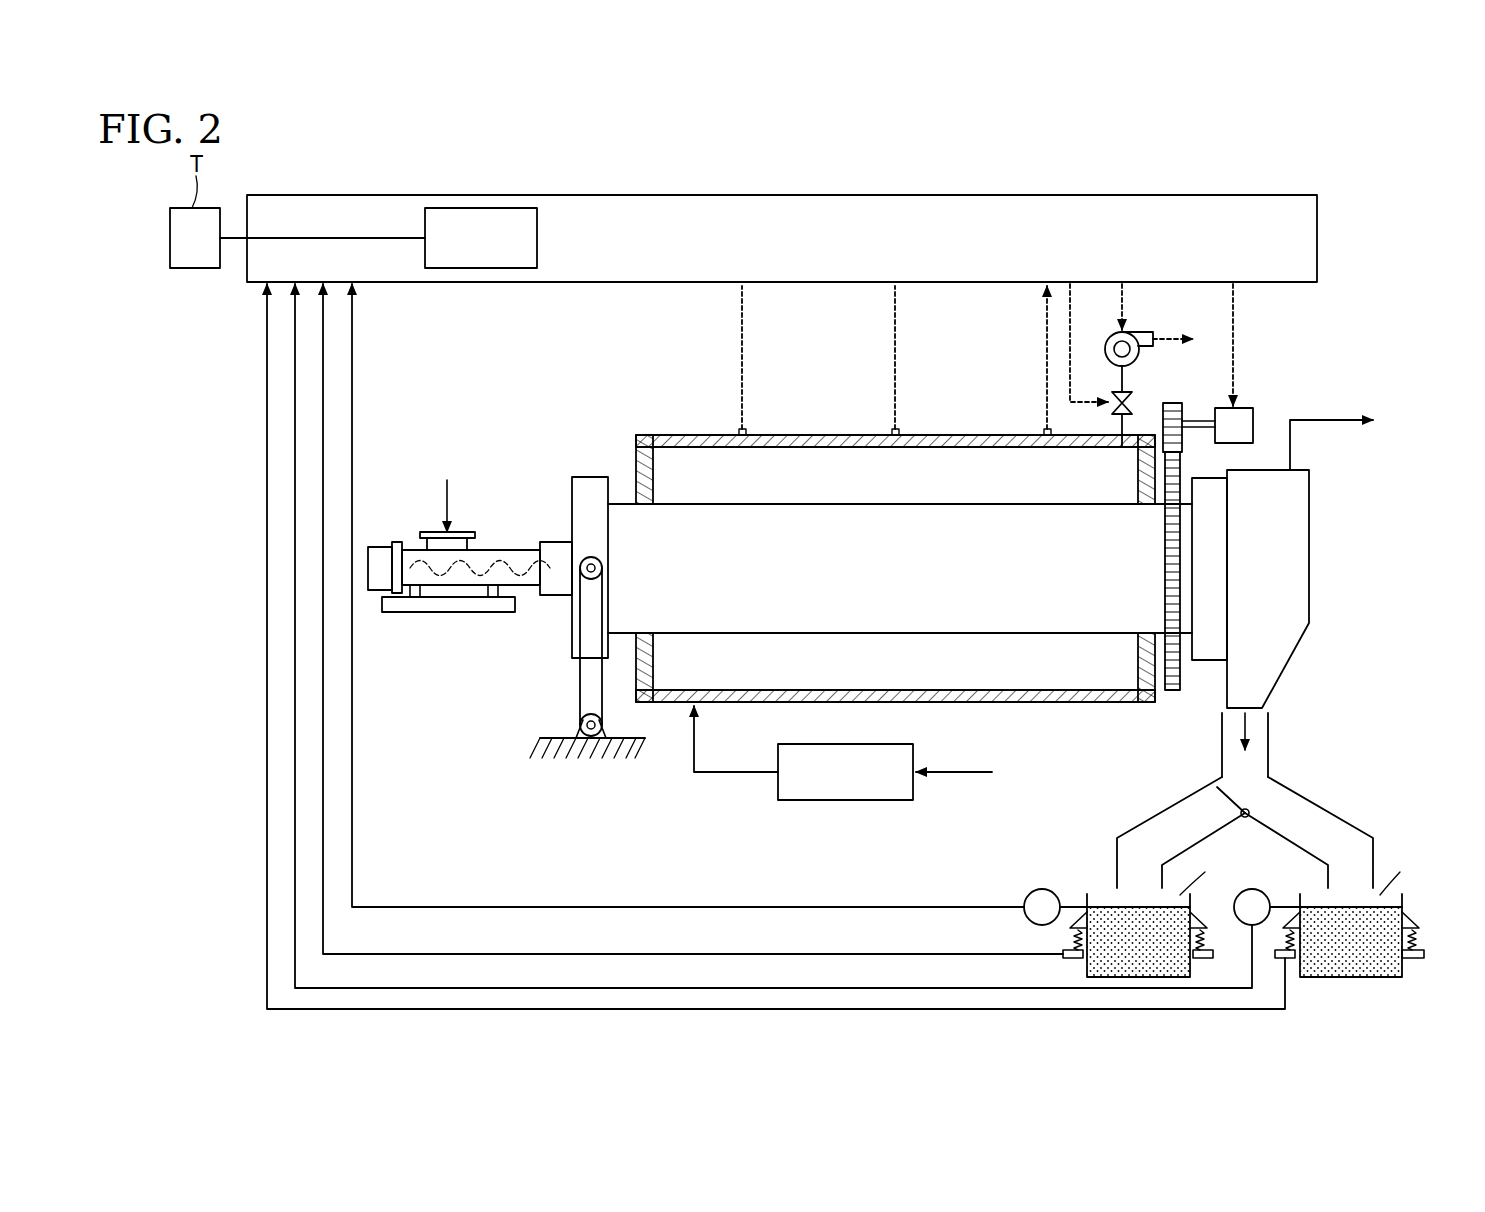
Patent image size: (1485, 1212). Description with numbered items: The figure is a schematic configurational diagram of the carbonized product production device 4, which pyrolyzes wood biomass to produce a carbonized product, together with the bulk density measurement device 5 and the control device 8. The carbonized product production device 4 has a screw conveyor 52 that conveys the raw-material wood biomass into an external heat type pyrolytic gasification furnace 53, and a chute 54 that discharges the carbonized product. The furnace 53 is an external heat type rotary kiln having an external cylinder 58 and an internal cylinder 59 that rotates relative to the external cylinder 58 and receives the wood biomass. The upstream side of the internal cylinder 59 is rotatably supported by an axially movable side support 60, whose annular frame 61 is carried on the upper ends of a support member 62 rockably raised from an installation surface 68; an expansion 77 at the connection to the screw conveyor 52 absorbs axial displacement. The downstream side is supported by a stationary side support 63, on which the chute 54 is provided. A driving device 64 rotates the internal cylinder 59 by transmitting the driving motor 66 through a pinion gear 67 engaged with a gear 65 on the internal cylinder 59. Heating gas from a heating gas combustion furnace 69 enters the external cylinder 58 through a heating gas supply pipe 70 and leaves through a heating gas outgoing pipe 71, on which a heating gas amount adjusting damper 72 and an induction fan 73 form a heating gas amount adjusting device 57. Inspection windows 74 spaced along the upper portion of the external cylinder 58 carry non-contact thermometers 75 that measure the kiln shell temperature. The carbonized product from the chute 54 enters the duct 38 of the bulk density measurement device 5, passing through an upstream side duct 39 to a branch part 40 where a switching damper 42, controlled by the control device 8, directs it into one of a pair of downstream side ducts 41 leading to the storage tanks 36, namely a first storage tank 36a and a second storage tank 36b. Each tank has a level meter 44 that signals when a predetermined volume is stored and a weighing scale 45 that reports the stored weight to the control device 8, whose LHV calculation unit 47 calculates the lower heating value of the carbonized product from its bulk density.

The carbonized product production device 4 is at (1422, 232).
The bulk density measurement device 5 is at (1255, 778).
The control device 8 is at (628, 195).
The storage tanks 36 is at (1225, 922).
The first storage tank 36a is at (1087, 897).
The second storage tank 36b is at (1330, 978).
The duct 38 is at (1255, 800).
The upstream side duct 39 is at (1272, 745).
The branch part 40 is at (1255, 800).
The downstream side ducts 41 is at (1163, 830).
The switching damper 42 is at (1230, 802).
The level meter 44 is at (1024, 893).
The weighing scale 45 is at (1068, 958).
The LHV calculation unit 47 is at (478, 208).
The screw conveyor 52 is at (411, 548).
The external heat type pyrolytic gasification furnace 53 is at (900, 546).
The chute 54 is at (1310, 490).
The heating gas amount adjusting device 57 is at (1172, 325).
The external cylinder 58 is at (1069, 703).
The internal cylinder 59 is at (912, 634).
The movable side support 60 is at (565, 578).
The annular frame 61 is at (580, 505).
The support member 62 is at (588, 678).
The stationary side support 63 is at (1222, 570).
The driving device 64 is at (1216, 515).
The gear 65 is at (1172, 692).
The driving motor 66 is at (1253, 412).
The pinion gear 67 is at (1168, 403).
The installation surface 68 is at (556, 738).
The heating gas combustion furnace 69 is at (860, 802).
The heating gas supply pipe 70 is at (694, 772).
The heating gas outgoing pipe 71 is at (1122, 428).
The heating gas amount adjusting damper 72 is at (1116, 392).
The induction fan 73 is at (1145, 330).
The inspection windows 74 is at (739, 433).
The non-contact thermometers 75 is at (748, 433).
The expansion 77 is at (557, 590).